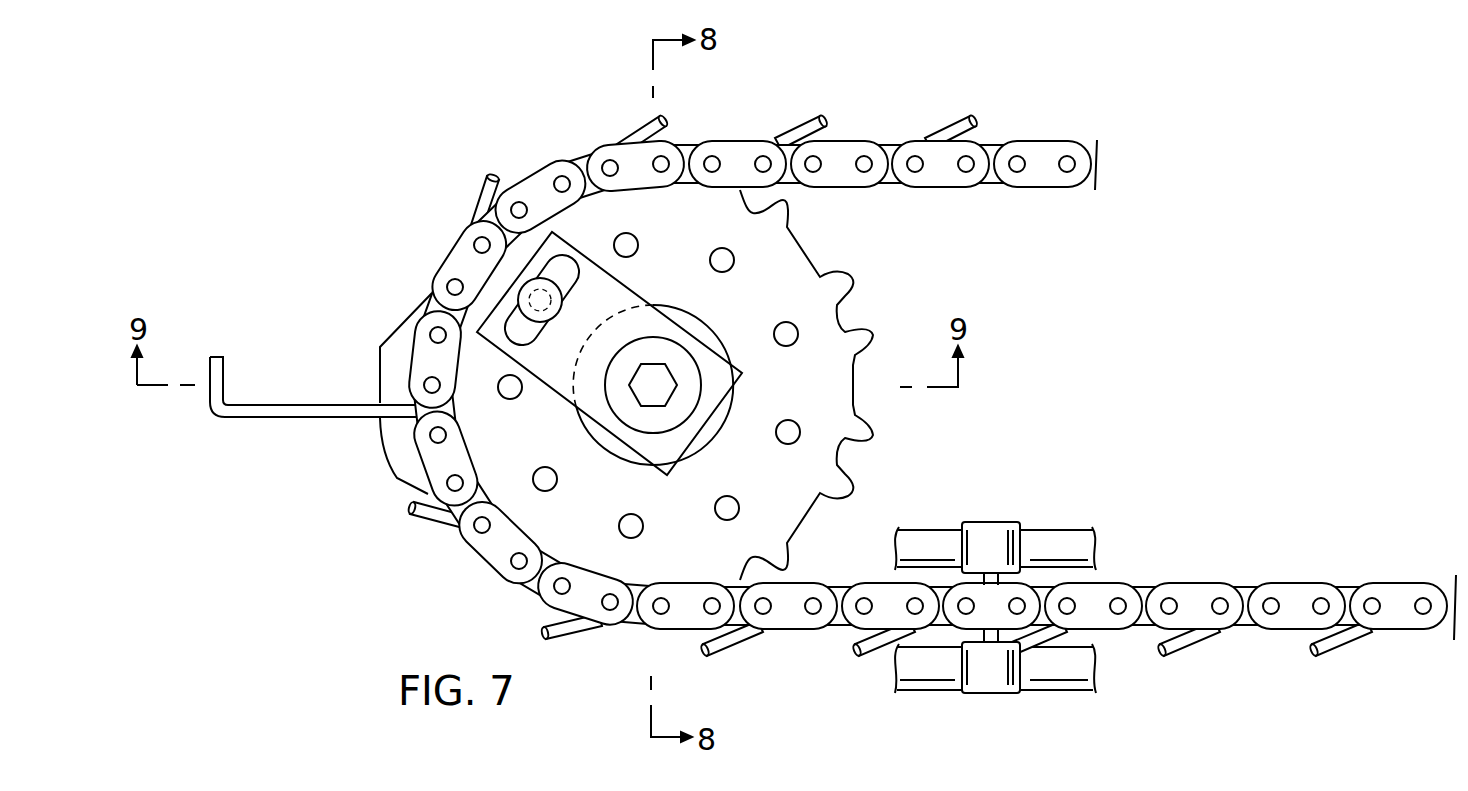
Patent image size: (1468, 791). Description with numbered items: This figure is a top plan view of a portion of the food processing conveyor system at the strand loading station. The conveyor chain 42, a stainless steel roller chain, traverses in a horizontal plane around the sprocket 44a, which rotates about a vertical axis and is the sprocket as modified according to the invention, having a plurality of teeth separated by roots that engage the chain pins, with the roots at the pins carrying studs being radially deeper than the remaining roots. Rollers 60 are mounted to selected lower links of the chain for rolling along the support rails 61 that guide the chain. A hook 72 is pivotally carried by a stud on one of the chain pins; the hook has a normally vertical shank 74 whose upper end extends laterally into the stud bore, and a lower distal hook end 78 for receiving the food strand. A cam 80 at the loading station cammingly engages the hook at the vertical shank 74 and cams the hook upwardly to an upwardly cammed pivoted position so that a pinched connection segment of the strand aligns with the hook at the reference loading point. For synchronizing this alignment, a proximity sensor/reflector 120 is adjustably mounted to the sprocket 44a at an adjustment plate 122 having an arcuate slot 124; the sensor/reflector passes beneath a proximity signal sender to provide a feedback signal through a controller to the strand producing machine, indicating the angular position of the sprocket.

The chain 42 is at (886, 138).
The sprocket 44a is at (808, 270).
The roller 60 is at (995, 530).
The support rail 61 is at (1068, 535).
The hook 72 is at (230, 415).
The vertical shank 74 is at (305, 412).
The lower distal hook end 78 is at (482, 182).
The cam 80 is at (396, 343).
The proximity sensor/reflector 120 is at (548, 309).
The adjustment plate 122 is at (612, 283).
The arcuate slot 124 is at (570, 265).